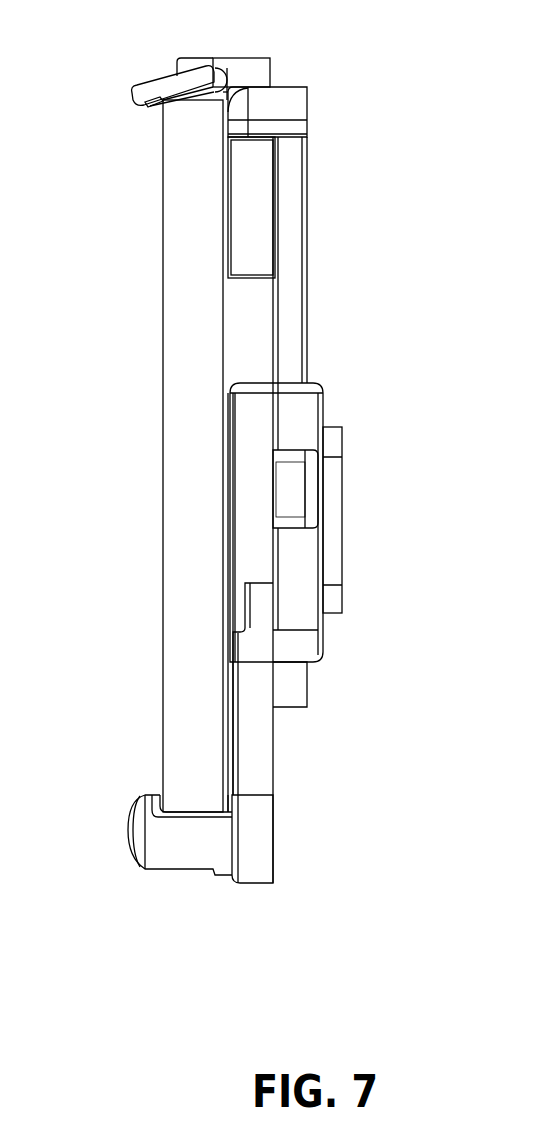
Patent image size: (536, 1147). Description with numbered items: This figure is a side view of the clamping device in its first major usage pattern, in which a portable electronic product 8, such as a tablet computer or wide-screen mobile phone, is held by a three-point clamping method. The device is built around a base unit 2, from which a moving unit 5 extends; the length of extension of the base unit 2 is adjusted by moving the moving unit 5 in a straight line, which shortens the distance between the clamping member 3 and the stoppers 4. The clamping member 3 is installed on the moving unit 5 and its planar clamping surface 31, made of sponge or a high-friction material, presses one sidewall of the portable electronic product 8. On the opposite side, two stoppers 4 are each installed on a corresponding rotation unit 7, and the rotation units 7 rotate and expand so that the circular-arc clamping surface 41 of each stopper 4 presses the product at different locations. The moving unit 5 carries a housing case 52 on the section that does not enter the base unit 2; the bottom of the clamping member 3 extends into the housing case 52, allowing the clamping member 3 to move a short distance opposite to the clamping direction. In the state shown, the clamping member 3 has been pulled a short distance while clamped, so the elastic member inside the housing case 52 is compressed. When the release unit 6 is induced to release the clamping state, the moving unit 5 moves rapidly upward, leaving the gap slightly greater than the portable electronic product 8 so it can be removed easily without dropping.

The base unit 2 is at (303, 420).
The clamping member 3 is at (168, 82).
The clamping surface 31 is at (157, 103).
The stopper 4 is at (193, 858).
The clamping surface 41 is at (208, 817).
The moving unit 5 is at (290, 105).
The housing case 52 is at (255, 214).
The release unit 6 is at (300, 485).
The rotation unit 7 is at (257, 763).
The portable electronic product 8 is at (183, 338).